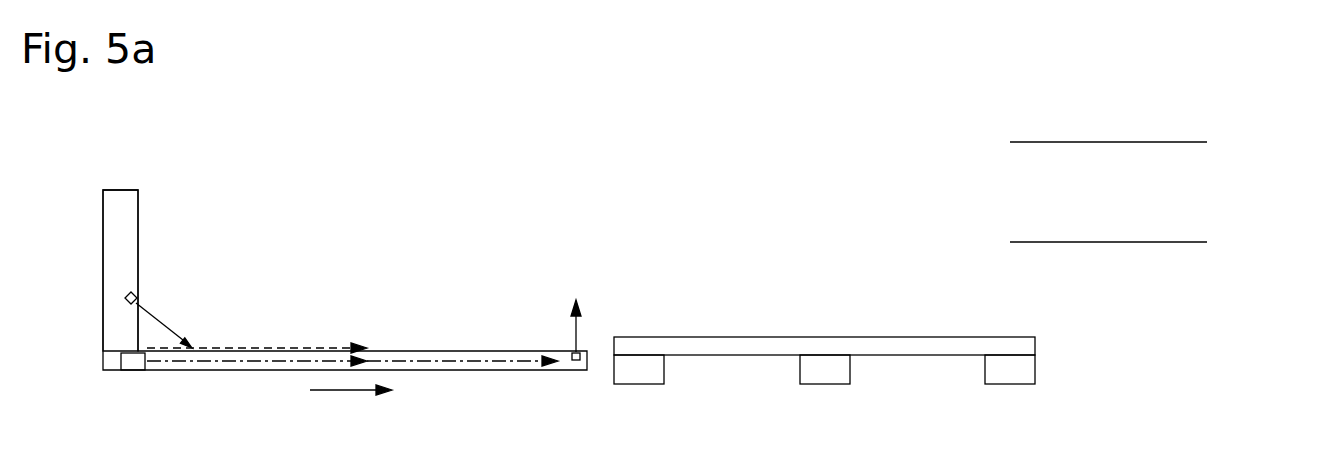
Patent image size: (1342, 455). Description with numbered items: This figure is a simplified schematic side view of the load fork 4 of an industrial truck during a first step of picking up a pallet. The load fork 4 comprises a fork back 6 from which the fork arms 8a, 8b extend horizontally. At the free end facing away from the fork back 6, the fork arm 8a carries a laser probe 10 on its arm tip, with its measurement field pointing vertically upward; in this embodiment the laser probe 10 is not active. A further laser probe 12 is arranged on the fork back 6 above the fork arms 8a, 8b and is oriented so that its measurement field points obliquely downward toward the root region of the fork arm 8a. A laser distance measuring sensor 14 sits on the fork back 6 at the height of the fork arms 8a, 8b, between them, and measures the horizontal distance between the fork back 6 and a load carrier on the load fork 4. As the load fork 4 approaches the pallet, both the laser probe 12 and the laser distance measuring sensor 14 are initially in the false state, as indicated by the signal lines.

The load fork 4 is at (190, 232).
The fork back 6 is at (124, 213).
The fork arm 8a is at (422, 350).
The fork arm 8b is at (352, 361).
The laser probe 10 is at (578, 352).
The laser probe 12 is at (140, 296).
The laser distance measuring sensor 14 is at (133, 372).